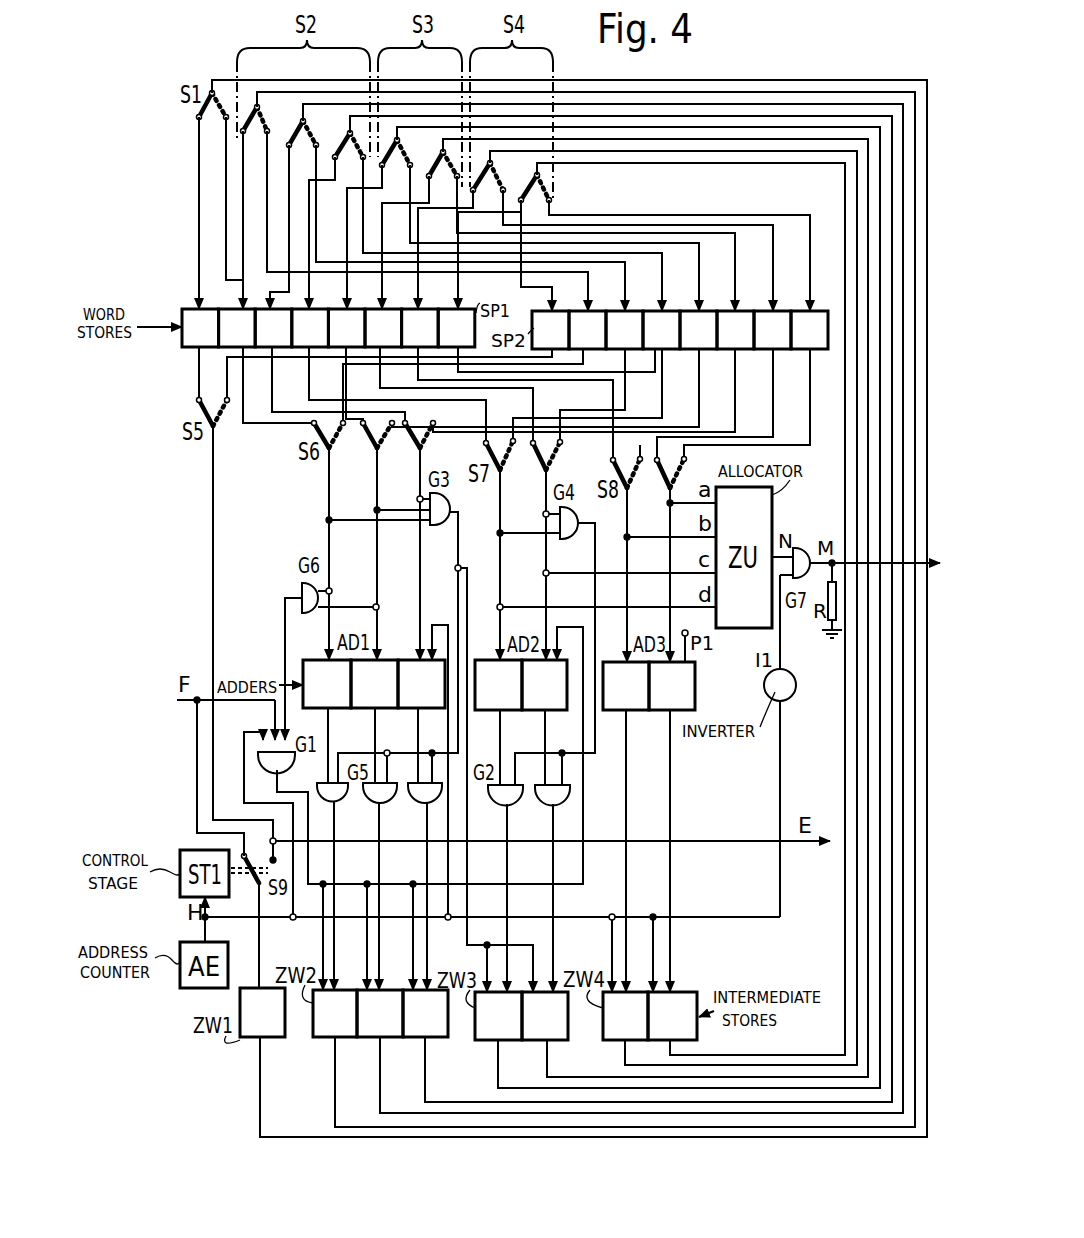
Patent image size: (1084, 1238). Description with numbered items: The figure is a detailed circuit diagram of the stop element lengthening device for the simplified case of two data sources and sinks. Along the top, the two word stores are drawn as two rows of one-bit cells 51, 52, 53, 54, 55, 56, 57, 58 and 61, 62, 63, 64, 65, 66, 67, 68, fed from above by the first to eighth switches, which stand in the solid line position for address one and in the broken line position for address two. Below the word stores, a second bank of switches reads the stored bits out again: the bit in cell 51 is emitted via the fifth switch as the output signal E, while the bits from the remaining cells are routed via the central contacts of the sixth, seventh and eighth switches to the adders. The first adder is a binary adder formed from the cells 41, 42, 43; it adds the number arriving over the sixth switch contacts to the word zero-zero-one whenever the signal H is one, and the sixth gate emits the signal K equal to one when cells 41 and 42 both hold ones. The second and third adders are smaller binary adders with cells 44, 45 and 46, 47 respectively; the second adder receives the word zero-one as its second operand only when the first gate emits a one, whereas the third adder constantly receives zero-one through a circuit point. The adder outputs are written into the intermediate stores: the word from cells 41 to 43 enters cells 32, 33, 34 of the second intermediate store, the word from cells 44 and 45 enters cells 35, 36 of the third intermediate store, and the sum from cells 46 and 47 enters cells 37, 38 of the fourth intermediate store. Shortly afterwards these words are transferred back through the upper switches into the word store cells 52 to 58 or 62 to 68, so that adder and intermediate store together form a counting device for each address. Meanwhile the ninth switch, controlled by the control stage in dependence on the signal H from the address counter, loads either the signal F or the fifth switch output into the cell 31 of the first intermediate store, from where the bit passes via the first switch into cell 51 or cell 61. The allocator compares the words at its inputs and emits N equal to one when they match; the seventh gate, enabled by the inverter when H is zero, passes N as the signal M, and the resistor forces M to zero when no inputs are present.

The cell 31 is at (262, 1012).
The cell 32 is at (335, 1013).
The cell 33 is at (380, 1013).
The cell 34 is at (425, 1013).
The cell 35 is at (498, 1016).
The cell 36 is at (545, 1016).
The cell 37 is at (625, 1016).
The cell 38 is at (672, 1016).
The cell 41 is at (327, 684).
The cell 42 is at (374, 684).
The cell 43 is at (421, 684).
The cell 44 is at (498, 685).
The cell 45 is at (544, 685).
The cell 46 is at (626, 686).
The cell 47 is at (672, 686).
The cell 51 is at (200, 328).
The cell 52 is at (237, 328).
The cell 53 is at (273, 328).
The cell 54 is at (310, 328).
The cell 55 is at (346, 328).
The cell 56 is at (383, 328).
The cell 57 is at (420, 328).
The cell 58 is at (456, 328).
The cell 61 is at (550, 330).
The cell 62 is at (587, 330).
The cell 63 is at (624, 330).
The cell 64 is at (661, 330).
The cell 65 is at (698, 330).
The cell 66 is at (735, 330).
The cell 67 is at (772, 330).
The cell 68 is at (809, 330).